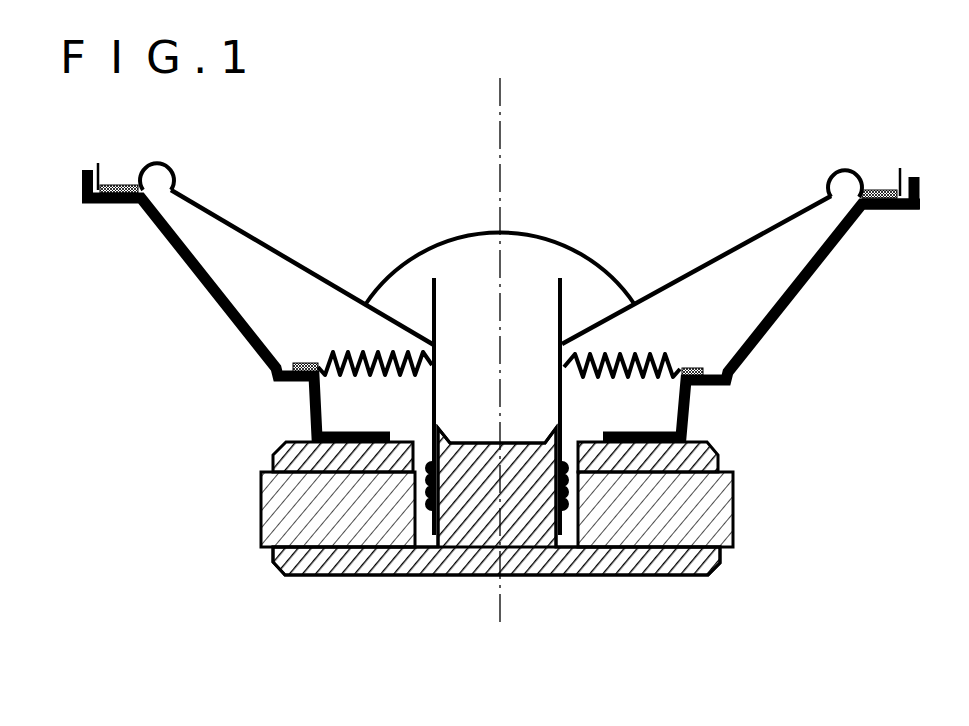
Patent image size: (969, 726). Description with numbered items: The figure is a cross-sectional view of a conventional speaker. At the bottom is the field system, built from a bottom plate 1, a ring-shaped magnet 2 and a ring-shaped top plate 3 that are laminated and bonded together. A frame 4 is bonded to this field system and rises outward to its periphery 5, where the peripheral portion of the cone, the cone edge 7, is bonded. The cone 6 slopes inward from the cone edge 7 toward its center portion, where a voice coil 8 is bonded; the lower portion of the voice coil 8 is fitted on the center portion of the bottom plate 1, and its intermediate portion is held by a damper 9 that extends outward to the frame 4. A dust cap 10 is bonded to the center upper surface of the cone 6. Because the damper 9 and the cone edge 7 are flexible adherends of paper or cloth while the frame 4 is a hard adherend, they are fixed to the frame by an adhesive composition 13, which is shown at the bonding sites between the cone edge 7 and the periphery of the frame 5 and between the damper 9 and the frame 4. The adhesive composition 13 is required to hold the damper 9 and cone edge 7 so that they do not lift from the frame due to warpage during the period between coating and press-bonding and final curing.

The bottom plate 1 is at (713, 568).
The magnet 2 is at (733, 515).
The top plate 3 is at (722, 463).
The frame 4 is at (767, 323).
The periphery of the frame 5 is at (887, 209).
The cone 6 is at (742, 236).
The cone edge 7 is at (895, 185).
The voice coil 8 is at (432, 322).
The damper 9 is at (614, 373).
The dust cap 10 is at (522, 234).
The adhesive composition 13 is at (130, 186).